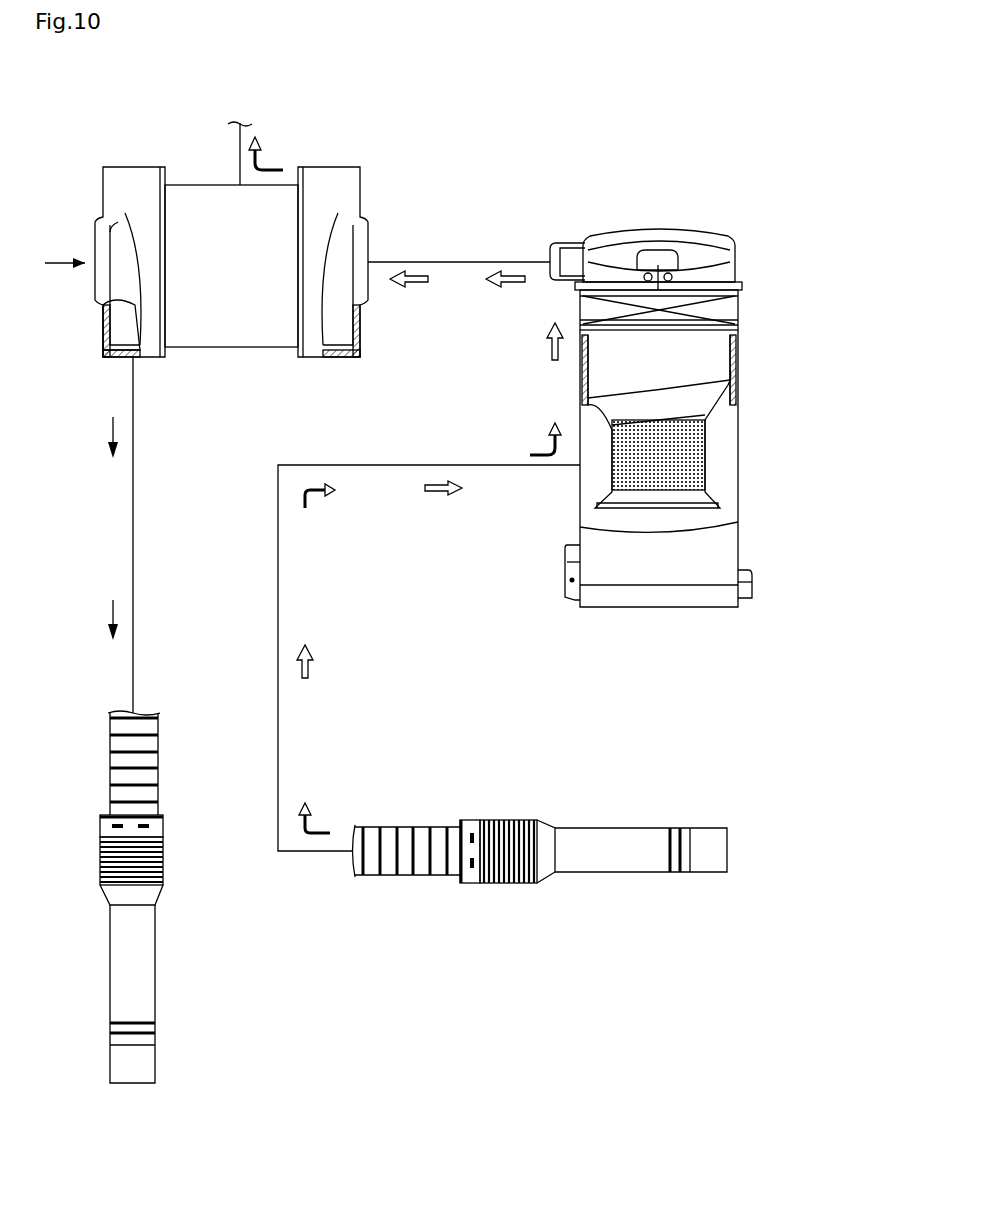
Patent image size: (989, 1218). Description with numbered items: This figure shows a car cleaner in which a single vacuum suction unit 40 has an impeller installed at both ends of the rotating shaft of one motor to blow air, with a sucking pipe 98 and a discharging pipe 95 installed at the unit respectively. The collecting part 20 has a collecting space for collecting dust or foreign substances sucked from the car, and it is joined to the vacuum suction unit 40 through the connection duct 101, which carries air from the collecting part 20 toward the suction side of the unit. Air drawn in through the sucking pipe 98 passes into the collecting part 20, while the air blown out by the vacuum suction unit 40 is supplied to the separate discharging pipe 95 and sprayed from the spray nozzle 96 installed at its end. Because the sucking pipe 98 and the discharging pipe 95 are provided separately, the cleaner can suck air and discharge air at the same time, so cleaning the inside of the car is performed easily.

The collecting part 20 is at (762, 427).
The vacuum suction unit 40 is at (292, 145).
The discharging pipe 95 is at (135, 512).
The spray nozzle 96 is at (143, 948).
The sucking pipe 98 is at (280, 710).
The connection duct 101 is at (526, 262).